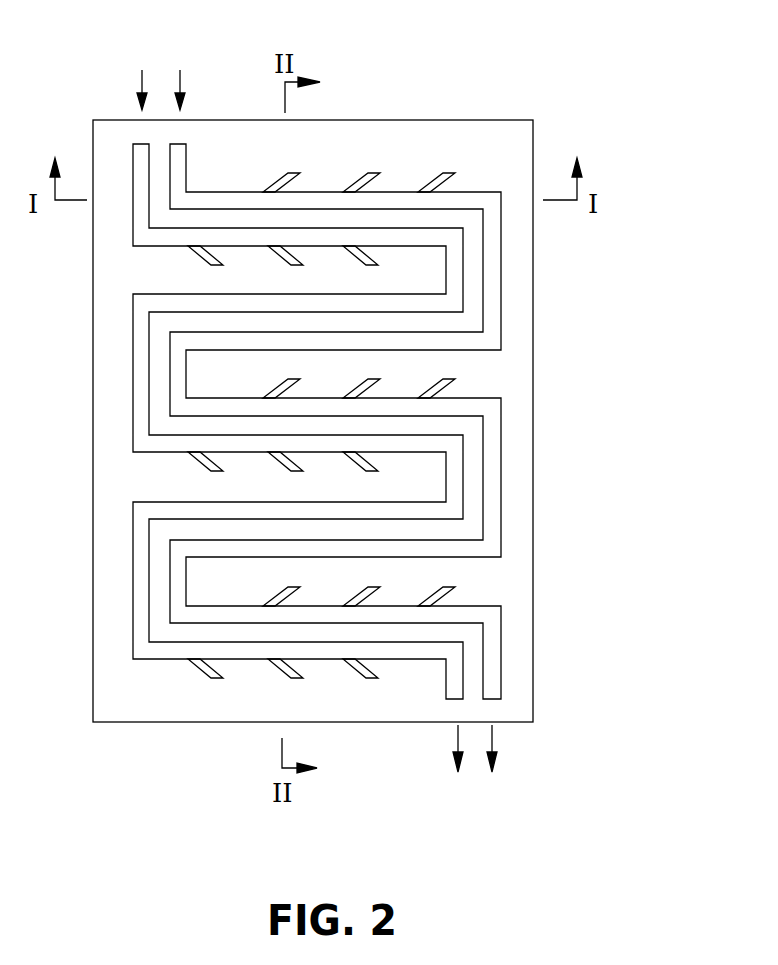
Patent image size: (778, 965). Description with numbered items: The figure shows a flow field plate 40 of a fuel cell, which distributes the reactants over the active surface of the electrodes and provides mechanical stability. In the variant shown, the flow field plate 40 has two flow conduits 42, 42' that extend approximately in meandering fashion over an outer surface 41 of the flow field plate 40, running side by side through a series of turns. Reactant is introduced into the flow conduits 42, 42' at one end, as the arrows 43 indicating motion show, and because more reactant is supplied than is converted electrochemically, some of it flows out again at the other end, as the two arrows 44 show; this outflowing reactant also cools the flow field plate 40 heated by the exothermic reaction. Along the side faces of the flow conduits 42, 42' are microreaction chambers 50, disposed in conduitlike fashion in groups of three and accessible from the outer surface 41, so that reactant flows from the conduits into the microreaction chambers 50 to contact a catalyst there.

The flow field plate 40 is at (342, 371).
The outer surface 41 is at (118, 700).
The flow conduit 42 is at (245, 421).
The flow conduit 42' is at (396, 421).
The arrows indicating motion 43 is at (142, 82).
The arrows 44 is at (493, 735).
The microreaction chambers 50 is at (268, 189).